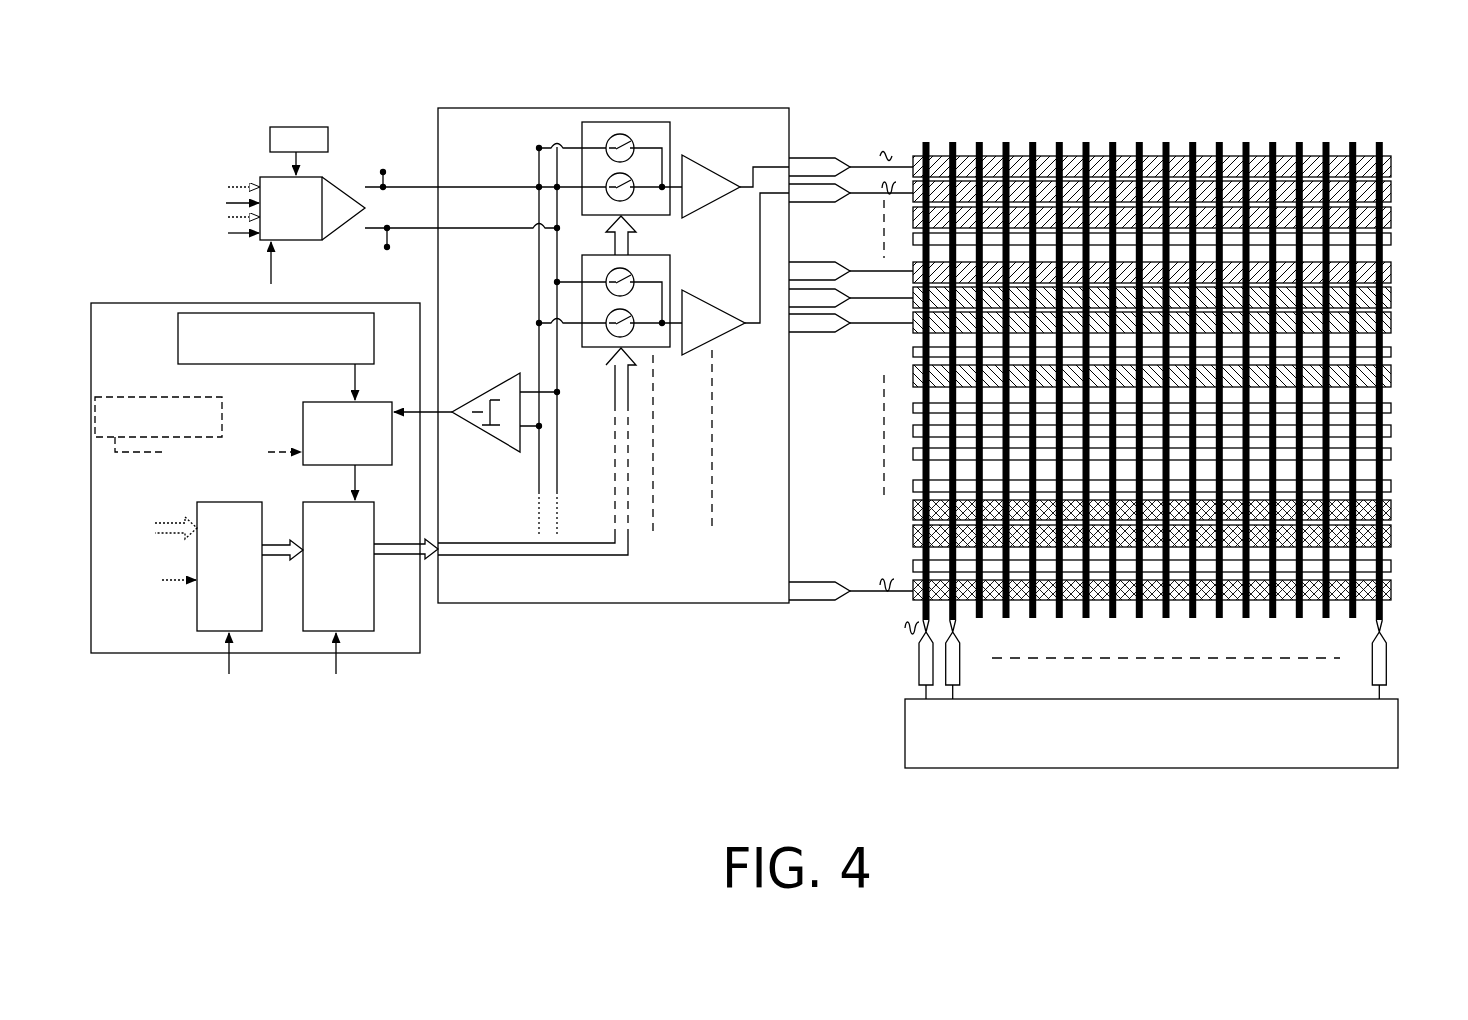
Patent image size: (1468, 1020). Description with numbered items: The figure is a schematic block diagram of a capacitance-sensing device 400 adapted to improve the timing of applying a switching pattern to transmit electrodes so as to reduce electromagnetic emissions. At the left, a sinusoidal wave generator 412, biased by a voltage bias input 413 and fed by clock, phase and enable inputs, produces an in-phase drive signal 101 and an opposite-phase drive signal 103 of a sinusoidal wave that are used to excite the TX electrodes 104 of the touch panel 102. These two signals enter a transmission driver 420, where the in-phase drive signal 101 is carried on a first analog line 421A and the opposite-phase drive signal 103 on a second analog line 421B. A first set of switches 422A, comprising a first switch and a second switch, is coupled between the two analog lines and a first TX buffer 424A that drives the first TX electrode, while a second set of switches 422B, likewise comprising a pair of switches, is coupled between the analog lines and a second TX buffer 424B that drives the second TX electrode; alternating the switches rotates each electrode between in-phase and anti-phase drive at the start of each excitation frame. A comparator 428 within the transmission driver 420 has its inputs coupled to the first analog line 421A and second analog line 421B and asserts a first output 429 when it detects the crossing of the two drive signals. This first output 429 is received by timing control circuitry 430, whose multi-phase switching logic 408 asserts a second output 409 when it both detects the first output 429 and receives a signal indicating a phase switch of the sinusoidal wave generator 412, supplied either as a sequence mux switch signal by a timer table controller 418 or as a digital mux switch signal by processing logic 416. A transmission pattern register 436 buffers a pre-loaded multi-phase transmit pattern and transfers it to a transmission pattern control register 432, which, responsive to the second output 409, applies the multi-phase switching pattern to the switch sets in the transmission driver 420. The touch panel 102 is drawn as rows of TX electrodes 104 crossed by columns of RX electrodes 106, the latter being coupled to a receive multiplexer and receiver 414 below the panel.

The capacitance-sensing device 400 is at (777, 403).
The sinusoidal wave generator 412 is at (237, 167).
The voltage bias (Vbias) input 413 is at (305, 127).
The in-phase drive signal 101 is at (352, 180).
The opposite-phase drive signal 103 is at (362, 244).
The transmission driver 420 is at (619, 330).
The first analog line 421A is at (539, 147).
The second analog line 421B is at (557, 147).
The first set of switches 422A is at (595, 125).
The second set of switches 422B is at (658, 356).
The first TX buffer 424A is at (718, 170).
The second TX buffer 424B is at (713, 343).
The comparator 428 is at (496, 390).
The first output 429 is at (452, 416).
The timing control circuitry 430 is at (270, 501).
The timer table controller 418 is at (276, 356).
The processing logic 416 is at (198, 440).
The multi-phase switching logic 408 is at (347, 433).
The second output 409 is at (355, 483).
The transmission pattern register 436 is at (198, 601).
The transmission pattern control register 432 is at (376, 601).
The TX electrodes 104 is at (826, 148).
The touch panel 102 is at (1130, 369).
The RX electrodes 106 is at (897, 677).
The receive multiplexer and receiver 414 is at (1151, 733).